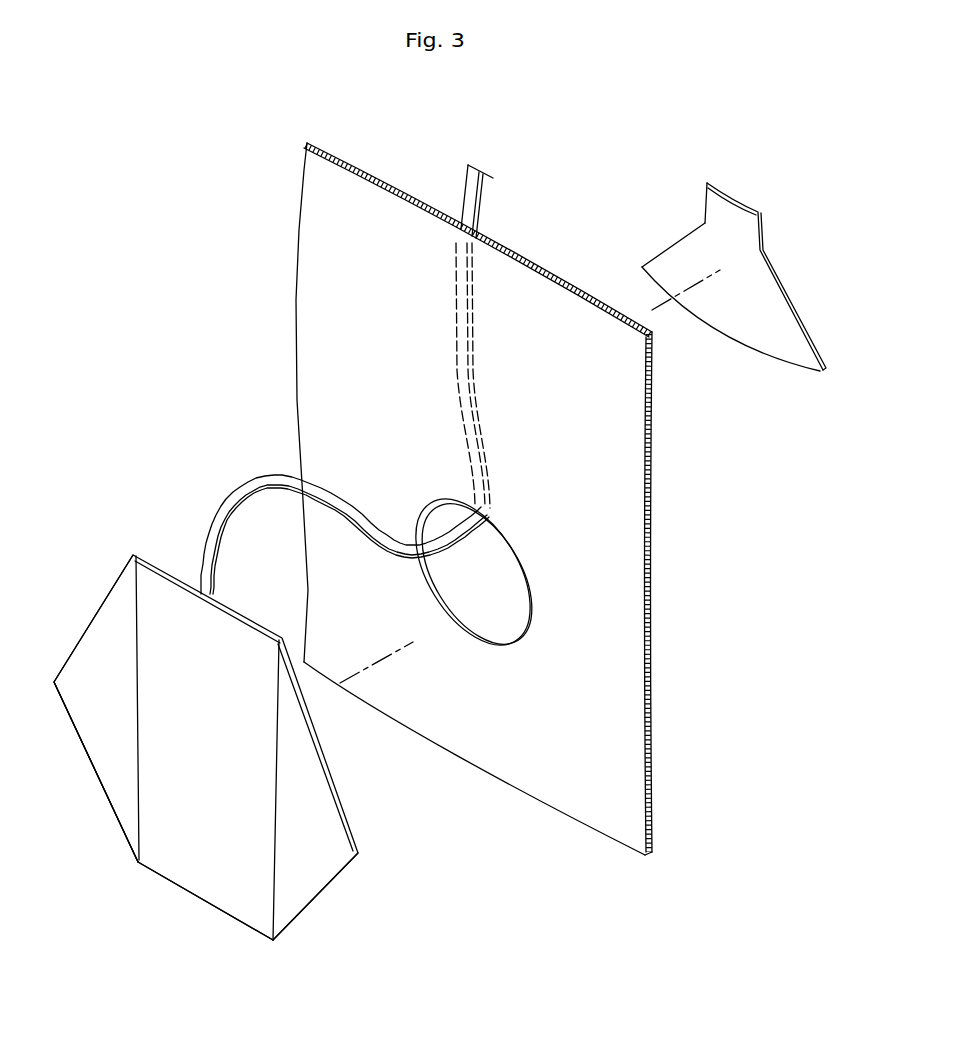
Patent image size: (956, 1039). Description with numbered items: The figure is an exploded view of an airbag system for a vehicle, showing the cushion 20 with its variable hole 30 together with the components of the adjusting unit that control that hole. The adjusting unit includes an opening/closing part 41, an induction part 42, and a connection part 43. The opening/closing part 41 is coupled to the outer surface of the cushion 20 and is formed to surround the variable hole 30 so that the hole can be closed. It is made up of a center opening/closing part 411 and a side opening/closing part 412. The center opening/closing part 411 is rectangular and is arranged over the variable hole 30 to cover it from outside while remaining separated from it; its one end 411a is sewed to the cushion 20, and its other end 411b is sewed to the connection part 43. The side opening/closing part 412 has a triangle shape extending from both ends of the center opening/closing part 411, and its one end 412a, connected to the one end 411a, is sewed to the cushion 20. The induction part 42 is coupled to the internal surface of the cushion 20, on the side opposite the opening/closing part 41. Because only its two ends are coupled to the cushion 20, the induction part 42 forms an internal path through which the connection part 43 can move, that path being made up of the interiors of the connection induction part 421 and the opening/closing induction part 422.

The cushion 20 is at (298, 392).
The variable hole 30 is at (476, 612).
The opening/closing part 41 is at (250, 740).
The center opening/closing part 411 is at (252, 874).
The one end of the center opening/closing part 411a is at (203, 903).
The other end of the center opening/closing part 411b is at (153, 560).
The side opening/closing part 412 is at (97, 740).
The one end of the side opening/closing part 412a is at (113, 813).
The induction part 42 is at (679, 255).
The connection induction part 421 is at (712, 205).
The opening/closing induction part 422 is at (702, 293).
The connection part 43 is at (222, 507).